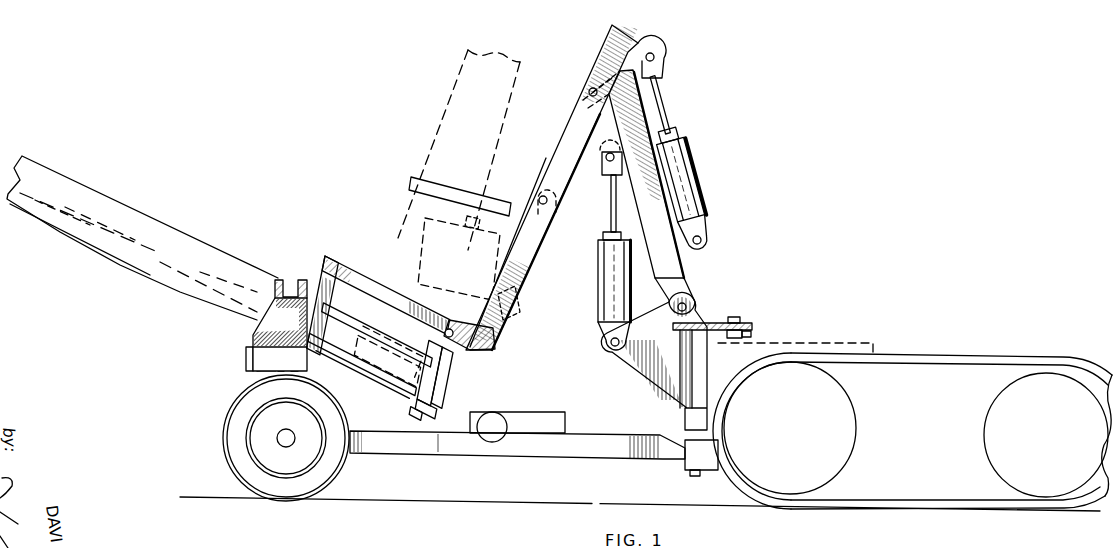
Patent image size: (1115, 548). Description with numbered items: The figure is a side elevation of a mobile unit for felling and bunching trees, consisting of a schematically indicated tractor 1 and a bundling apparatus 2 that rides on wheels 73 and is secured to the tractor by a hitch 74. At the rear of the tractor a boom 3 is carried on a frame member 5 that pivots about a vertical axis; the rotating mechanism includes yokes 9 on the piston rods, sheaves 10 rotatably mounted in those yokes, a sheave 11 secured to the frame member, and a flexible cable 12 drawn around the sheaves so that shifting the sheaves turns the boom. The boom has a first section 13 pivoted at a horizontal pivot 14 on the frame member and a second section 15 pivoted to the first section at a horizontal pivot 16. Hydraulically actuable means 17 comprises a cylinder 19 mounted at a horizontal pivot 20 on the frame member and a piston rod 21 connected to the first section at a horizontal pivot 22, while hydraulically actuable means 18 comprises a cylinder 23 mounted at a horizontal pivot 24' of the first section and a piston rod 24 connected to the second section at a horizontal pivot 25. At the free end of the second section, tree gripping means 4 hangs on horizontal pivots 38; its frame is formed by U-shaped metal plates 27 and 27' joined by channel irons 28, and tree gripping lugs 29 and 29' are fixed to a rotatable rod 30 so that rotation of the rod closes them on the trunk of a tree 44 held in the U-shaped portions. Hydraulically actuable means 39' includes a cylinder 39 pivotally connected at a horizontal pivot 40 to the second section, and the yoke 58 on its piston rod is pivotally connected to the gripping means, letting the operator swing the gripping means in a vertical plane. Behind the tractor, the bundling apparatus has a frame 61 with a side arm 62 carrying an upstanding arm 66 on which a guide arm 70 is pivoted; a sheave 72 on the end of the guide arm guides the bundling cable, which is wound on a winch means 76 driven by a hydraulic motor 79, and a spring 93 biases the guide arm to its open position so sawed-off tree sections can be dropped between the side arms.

The tractor 1 is at (899, 348).
The bundling apparatus 2 is at (580, 432).
The boom 3 is at (588, 56).
The tree gripping means 4 is at (349, 246).
The frame member 5 is at (672, 376).
The yokes 9 is at (736, 317).
The sheaves 10 is at (755, 330).
The sheave 11 is at (702, 323).
The flexible cable 12 is at (749, 325).
The first section 13 is at (655, 191).
The horizontal pivot 14 is at (691, 304).
The second section 15 is at (576, 135).
The horizontal pivot 16 is at (589, 90).
The hydraulically actuable means 17 is at (596, 284).
The hydraulically actuable means 18 is at (695, 128).
The cylinder 19 is at (606, 304).
The horizontal pivot 20 is at (609, 343).
The piston rod 21 is at (612, 198).
The horizontal pivot 22 is at (607, 165).
The cylinder 23 is at (681, 159).
The piston rod 24 is at (679, 98).
The horizontal pivot 24' is at (719, 232).
The horizontal pivot 25 is at (660, 52).
The U-shaped metal plate 27 is at (318, 291).
The U-shaped metal plate 27' is at (459, 379).
The channel irons 28 is at (381, 284).
The tree gripping lug 29 is at (362, 365).
The tree gripping lug 29' is at (392, 407).
The rotatable rod 30 is at (345, 312).
The horizontal pivots 38 is at (448, 323).
The cylinder 39 is at (525, 252).
The hydraulically actuable means 39' is at (546, 232).
The horizontal pivot 40 is at (540, 199).
The tree 44 is at (225, 252).
The yoke 58 is at (504, 317).
The frame 61 is at (678, 455).
The side arm 62 is at (437, 453).
The upstanding arm 66 is at (247, 362).
The guide arm 70 is at (279, 318).
The sheave 72 is at (290, 276).
The wheels 73 is at (240, 432).
The hitch 74 is at (700, 474).
The winch means 76 is at (494, 423).
The hydraulic motor 79 is at (546, 411).
The spring 93 is at (252, 352).